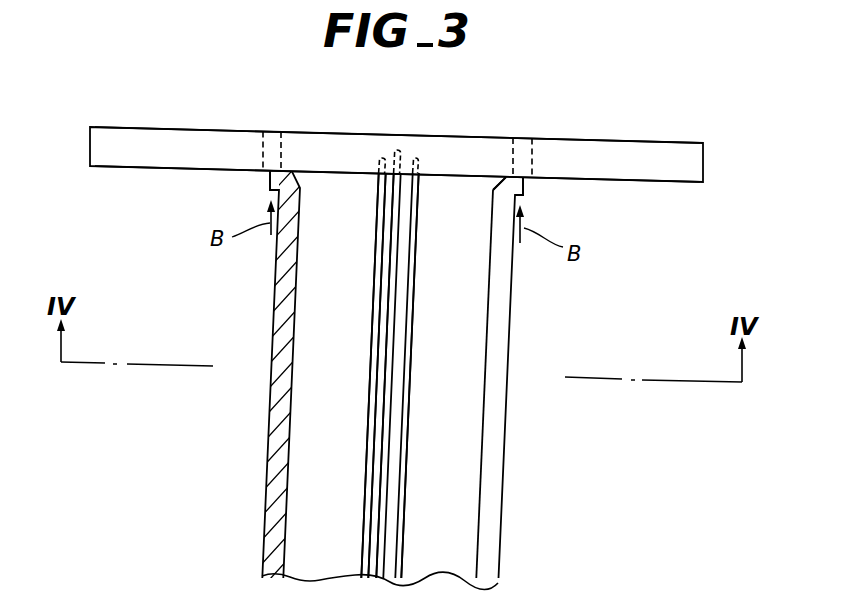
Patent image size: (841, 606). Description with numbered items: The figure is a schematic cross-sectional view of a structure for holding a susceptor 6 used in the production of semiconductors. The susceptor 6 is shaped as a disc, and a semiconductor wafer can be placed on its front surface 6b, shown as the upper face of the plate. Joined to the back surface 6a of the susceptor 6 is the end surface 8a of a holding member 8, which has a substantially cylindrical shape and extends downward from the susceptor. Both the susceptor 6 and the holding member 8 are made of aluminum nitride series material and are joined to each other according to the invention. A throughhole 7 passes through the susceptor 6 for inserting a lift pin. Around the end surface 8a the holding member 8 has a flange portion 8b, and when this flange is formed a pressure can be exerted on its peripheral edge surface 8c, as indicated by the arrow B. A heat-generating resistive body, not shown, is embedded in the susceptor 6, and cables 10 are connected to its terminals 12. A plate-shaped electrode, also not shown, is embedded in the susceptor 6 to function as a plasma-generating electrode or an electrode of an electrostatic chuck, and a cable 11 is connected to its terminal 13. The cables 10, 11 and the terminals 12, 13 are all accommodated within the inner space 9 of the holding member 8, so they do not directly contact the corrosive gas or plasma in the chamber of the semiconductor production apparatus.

The susceptor 6 is at (716, 144).
The back surface 6a is at (642, 181).
The front surface 6b is at (628, 141).
The throughhole 7 is at (263, 142).
The holding member 8 is at (503, 328).
The end surface 8a is at (507, 178).
The flange portion 8b is at (524, 191).
The peripheral edge surface 8c is at (270, 192).
The inner space 9 is at (452, 423).
The cables 10 is at (375, 245).
The cable 11 is at (388, 337).
The terminals 12 is at (378, 157).
The terminal 13 is at (400, 152).